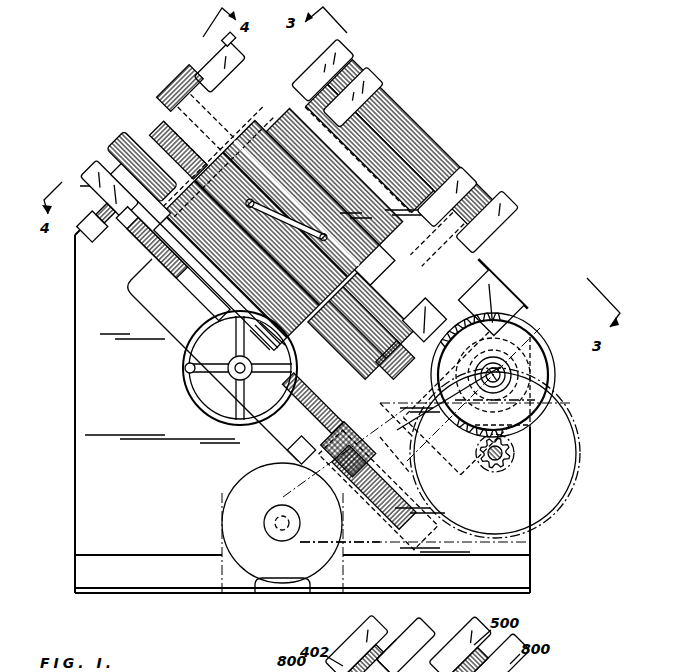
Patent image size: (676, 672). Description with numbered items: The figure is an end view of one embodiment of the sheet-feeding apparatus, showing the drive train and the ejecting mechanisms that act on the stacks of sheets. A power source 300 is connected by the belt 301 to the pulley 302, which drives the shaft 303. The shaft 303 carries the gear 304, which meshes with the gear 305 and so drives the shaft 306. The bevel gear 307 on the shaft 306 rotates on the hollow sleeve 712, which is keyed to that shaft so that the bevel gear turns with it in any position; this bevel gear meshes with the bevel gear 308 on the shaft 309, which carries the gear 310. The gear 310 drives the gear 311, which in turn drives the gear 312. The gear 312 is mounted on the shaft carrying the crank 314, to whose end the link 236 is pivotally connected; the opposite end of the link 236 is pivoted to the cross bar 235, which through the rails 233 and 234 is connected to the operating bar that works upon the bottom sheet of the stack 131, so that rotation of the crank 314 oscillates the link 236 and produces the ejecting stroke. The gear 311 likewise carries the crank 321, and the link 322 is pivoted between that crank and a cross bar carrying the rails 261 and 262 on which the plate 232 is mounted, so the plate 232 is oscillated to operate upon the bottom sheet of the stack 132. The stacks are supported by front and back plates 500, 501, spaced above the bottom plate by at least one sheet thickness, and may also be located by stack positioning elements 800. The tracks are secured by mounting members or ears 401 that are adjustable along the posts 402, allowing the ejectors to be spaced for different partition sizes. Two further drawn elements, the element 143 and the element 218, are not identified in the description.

The stack 131 is at (396, 121).
The stack 132 is at (378, 177).
The shaft 143 is at (167, 107).
The handwheel 218 is at (186, 372).
The plate 232 is at (207, 223).
The rail 233 is at (414, 438).
The rail 234 is at (203, 143).
The cross bar 235 is at (367, 240).
The link 236 is at (302, 196).
The rail 261 is at (127, 168).
The rail 262 is at (448, 411).
The power source 300 is at (298, 571).
The belt 301 is at (412, 547).
The pulley 302 is at (576, 430).
The shaft 303 is at (500, 455).
The gear 304 is at (508, 449).
The gear 305 is at (512, 332).
The shaft 306 is at (500, 372).
The bevel gear 307 is at (548, 373).
The bevel gear 308 is at (536, 430).
The shaft 309 is at (378, 490).
The gear 310 is at (354, 547).
The gear 311 is at (317, 413).
The gear 312 is at (213, 360).
The crank 314 is at (272, 146).
The crank 321 is at (322, 460).
The link 322 is at (331, 220).
The mounting member 401 is at (205, 115).
The post 402 is at (203, 52).
The front plate 500 is at (342, 45).
The back plate 501 is at (212, 54).
The hollow sleeve 712 is at (535, 398).
The stack positioning element 800 is at (366, 86).